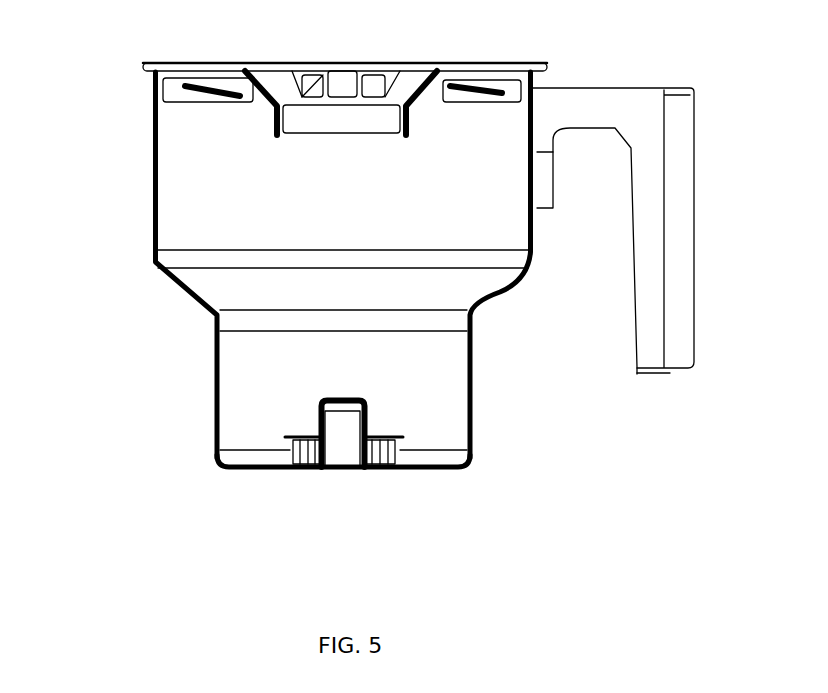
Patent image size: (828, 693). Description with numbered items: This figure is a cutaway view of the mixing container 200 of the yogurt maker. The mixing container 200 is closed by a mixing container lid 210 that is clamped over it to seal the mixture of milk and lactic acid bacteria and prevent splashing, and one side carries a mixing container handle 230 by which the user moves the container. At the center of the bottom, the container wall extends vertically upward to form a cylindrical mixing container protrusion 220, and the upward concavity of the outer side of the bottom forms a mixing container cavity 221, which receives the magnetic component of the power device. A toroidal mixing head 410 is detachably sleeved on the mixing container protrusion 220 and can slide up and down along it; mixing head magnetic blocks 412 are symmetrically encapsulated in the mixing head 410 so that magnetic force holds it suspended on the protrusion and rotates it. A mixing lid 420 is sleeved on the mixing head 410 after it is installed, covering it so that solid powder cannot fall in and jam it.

The mixing container 200 is at (192, 185).
The mixing container lid 210 is at (170, 70).
The mixing container protrusion 220 is at (368, 412).
The mixing container cavity 221 is at (345, 450).
The mixing container handle 230 is at (657, 355).
The mixing head 410 is at (282, 468).
The mixing head magnetic blocks 412 is at (383, 468).
The mixing lid 420 is at (290, 438).